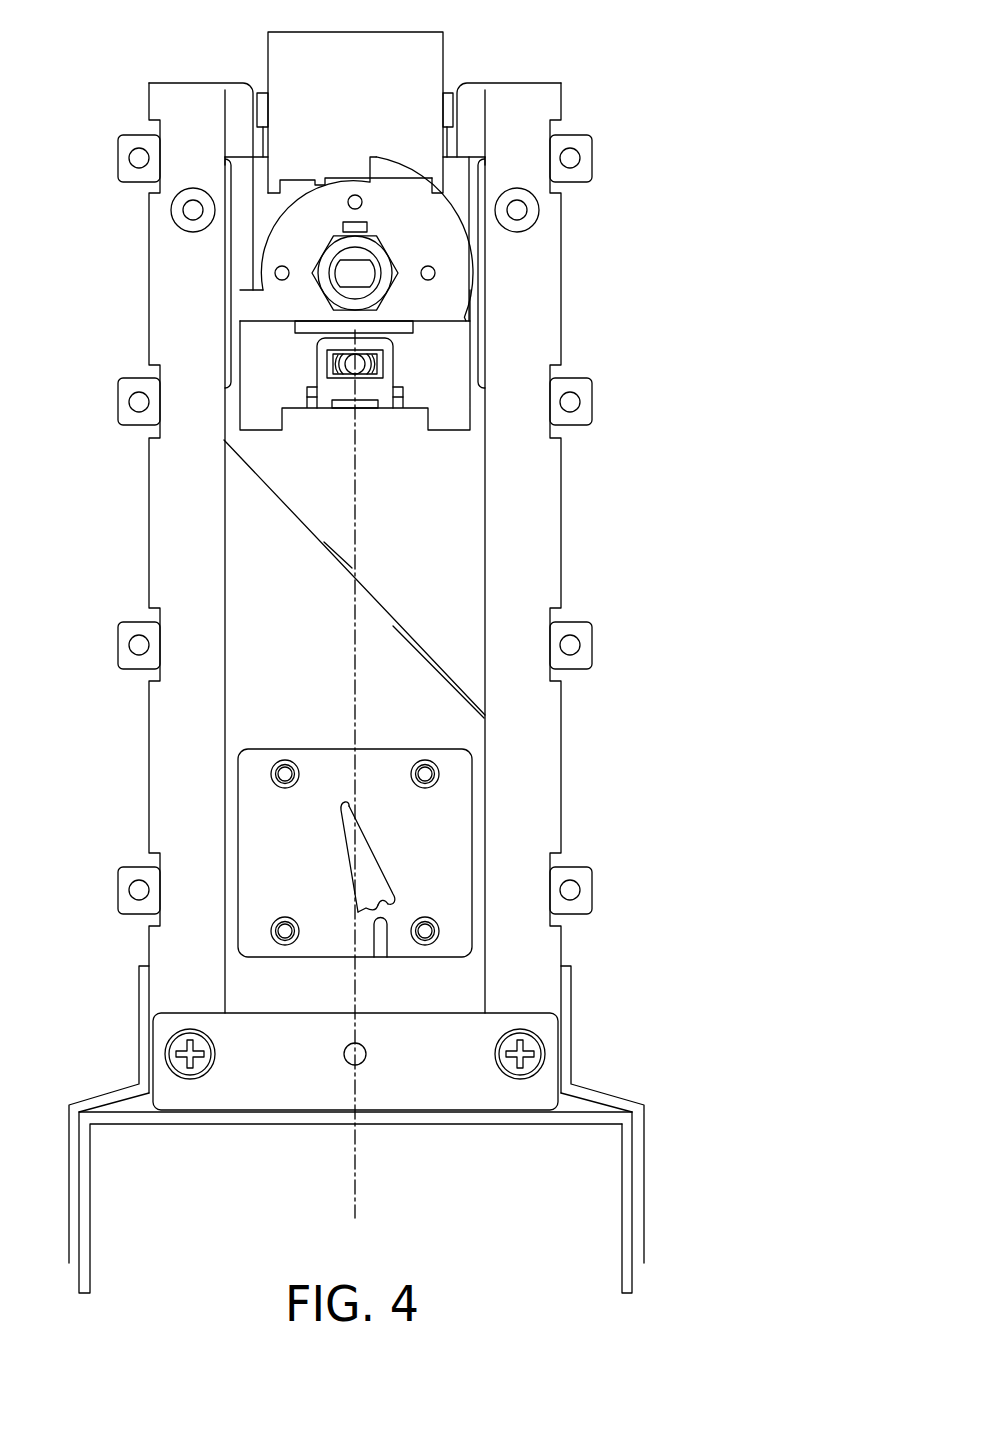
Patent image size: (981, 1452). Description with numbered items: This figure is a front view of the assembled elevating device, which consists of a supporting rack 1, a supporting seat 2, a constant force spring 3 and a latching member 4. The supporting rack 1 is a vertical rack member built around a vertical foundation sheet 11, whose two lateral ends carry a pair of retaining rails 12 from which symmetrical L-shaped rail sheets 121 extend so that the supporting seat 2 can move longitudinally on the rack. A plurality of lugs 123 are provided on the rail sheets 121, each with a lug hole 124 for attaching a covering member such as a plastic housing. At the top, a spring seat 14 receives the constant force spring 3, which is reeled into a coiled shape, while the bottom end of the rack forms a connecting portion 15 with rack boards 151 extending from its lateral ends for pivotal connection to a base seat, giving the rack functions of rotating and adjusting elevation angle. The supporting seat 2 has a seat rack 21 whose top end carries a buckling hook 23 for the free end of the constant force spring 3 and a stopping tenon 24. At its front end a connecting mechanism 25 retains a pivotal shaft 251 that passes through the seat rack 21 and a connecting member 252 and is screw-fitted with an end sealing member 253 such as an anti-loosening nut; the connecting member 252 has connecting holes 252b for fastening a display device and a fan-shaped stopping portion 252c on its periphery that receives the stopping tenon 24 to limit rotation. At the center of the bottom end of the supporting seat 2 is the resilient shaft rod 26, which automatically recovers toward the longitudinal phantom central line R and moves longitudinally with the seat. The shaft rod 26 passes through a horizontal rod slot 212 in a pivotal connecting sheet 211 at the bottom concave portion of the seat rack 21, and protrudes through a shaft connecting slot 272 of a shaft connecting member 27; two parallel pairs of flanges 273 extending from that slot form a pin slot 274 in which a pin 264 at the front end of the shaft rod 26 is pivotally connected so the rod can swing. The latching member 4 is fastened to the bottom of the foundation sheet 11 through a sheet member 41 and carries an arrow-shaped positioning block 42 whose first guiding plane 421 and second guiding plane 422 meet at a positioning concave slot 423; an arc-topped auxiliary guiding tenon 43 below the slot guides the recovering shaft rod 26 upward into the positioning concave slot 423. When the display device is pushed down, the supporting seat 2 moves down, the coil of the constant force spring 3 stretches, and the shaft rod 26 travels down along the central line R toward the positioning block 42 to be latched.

The supporting rack 1 is at (513, 473).
The foundation sheet 11 is at (268, 513).
The retaining rails 12 is at (185, 552).
The rail sheets 121 is at (533, 545).
The lugs 123 is at (583, 635).
The lug hole 124 is at (570, 655).
The spring seat 14 is at (447, 140).
The connecting portion 15 is at (442, 1130).
The rack boards 151 is at (625, 1230).
The supporting seat 2 is at (404, 450).
The seat rack 21 is at (448, 382).
The pivotal connecting sheet 211 is at (313, 340).
The rod slot 212 is at (380, 360).
The buckling hook 23 is at (298, 185).
The stopping tenon 24 is at (335, 183).
The connecting mechanism 25 is at (268, 222).
The pivotal shaft 251 is at (345, 278).
The connecting member 252 is at (448, 252).
The connecting holes 252b is at (437, 273).
The stopping portion 252c is at (282, 207).
The end sealing member 253 is at (470, 238).
The shaft rod 26 is at (330, 362).
The pin 264 is at (374, 350).
The shaft connecting member 27 is at (328, 393).
The shaft connecting slot 272 is at (355, 364).
The flanges 273 is at (380, 380).
The pin slot 274 is at (330, 375).
The constant force spring 3 is at (423, 47).
The latching member 4 is at (255, 803).
The sheet member 41 is at (327, 757).
The positioning block 42 is at (350, 835).
The first guiding plane 421 is at (380, 853).
The second guiding plane 422 is at (352, 862).
The positioning concave slot 423 is at (384, 900).
The auxiliary guiding tenon 43 is at (380, 942).
The phantom central line R is at (353, 657).